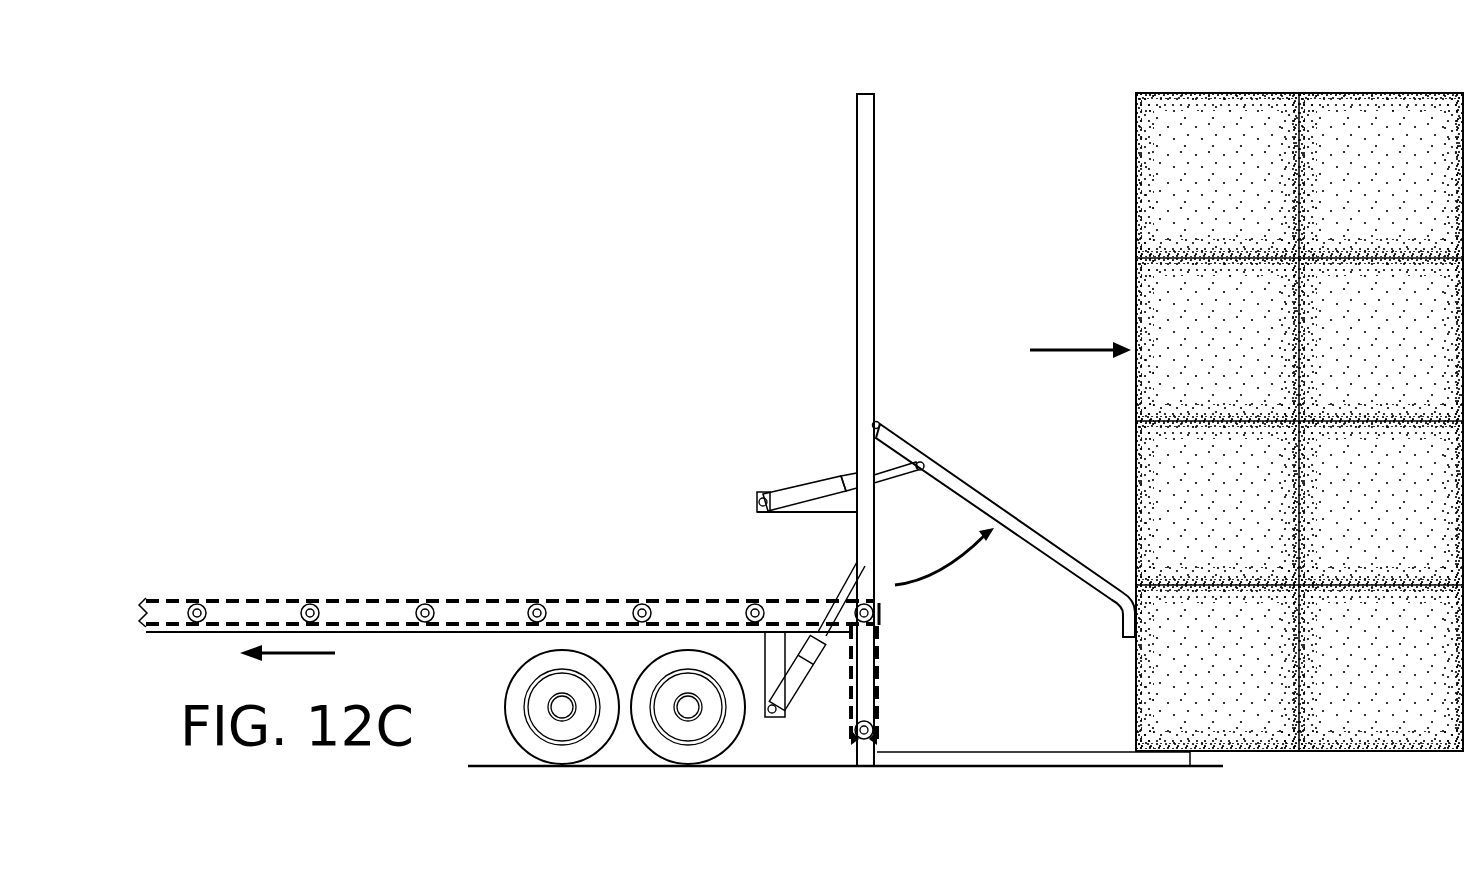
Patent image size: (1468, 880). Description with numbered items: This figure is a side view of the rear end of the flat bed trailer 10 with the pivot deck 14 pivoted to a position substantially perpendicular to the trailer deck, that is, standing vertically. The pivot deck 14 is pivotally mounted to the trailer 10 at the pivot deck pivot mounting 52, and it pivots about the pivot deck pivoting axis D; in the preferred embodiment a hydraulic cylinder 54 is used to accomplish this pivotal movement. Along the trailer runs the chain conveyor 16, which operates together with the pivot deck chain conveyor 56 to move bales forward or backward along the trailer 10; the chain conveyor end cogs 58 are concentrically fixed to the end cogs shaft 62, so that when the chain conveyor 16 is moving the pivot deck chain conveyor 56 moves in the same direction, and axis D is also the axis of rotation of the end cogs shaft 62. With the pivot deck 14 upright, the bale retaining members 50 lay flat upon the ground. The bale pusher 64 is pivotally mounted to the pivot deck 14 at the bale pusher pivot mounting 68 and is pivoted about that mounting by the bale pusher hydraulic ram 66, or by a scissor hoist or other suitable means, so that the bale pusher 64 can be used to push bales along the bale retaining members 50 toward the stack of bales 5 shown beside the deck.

The bags / stacked articles 5 is at (1210, 125).
The flat bed trailer 10 is at (247, 610).
The pivot deck 14 is at (860, 387).
The chain conveyor 16 is at (388, 628).
The bale retaining members 50 is at (1080, 758).
The pivot deck pivot mounting 52 is at (888, 644).
The hydraulic cylinder 54 is at (807, 653).
The pivot deck chain conveyor 56 is at (848, 700).
The chain conveyor end cogs 58 is at (845, 610).
The end cogs shaft 62 is at (880, 615).
The bale pusher 64 is at (1065, 568).
The bale pusher hydraulic ram 66 is at (835, 483).
The bale pusher pivot mounting 68 is at (880, 422).
The pivot deck pivoting axis D is at (866, 603).